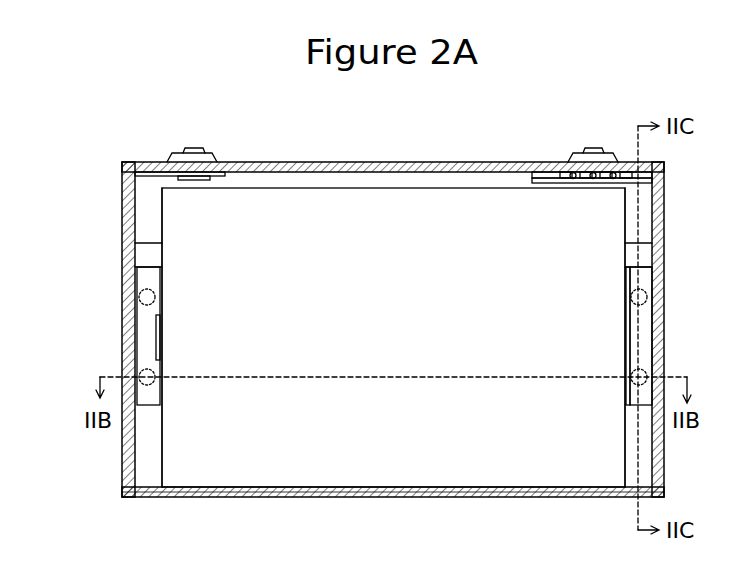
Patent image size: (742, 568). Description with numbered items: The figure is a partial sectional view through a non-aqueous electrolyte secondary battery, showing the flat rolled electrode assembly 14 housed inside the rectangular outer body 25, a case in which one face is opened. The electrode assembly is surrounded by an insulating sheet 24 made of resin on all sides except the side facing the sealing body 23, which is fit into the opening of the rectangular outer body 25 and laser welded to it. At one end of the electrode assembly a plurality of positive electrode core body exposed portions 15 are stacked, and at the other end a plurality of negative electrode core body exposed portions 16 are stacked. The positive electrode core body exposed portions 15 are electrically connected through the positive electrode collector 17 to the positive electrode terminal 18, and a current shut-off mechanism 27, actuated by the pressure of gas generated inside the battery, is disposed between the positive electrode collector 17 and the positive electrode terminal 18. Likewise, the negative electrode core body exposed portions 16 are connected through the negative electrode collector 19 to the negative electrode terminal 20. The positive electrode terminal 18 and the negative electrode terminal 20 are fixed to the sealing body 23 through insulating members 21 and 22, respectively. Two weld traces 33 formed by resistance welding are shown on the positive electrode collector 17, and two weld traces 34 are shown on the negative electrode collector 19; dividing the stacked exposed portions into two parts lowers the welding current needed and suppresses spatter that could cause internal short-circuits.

The flat rolled electrode assembly 14 is at (411, 453).
The positive electrode core body exposed portion 15 is at (645, 462).
The negative electrode core body exposed portion 16 is at (143, 465).
The positive electrode collector 17 is at (643, 235).
The positive electrode terminal 18 is at (590, 149).
The negative electrode collector 19 is at (141, 280).
The negative electrode terminal 20 is at (192, 148).
The insulating member 21 is at (568, 160).
The insulating member 22 is at (216, 162).
The sealing body 23 is at (434, 162).
The insulating sheet 24 is at (483, 490).
The rectangular outer body 25 is at (565, 492).
The current shut-off mechanism 27 is at (582, 182).
The weld trace 33 is at (632, 366).
The weld trace 34 is at (160, 308).